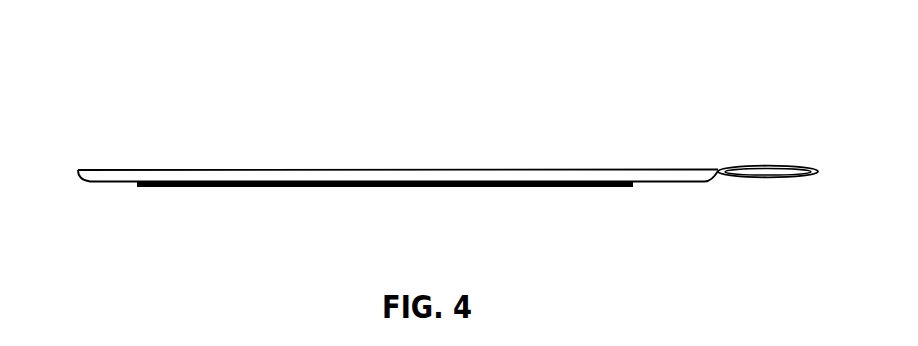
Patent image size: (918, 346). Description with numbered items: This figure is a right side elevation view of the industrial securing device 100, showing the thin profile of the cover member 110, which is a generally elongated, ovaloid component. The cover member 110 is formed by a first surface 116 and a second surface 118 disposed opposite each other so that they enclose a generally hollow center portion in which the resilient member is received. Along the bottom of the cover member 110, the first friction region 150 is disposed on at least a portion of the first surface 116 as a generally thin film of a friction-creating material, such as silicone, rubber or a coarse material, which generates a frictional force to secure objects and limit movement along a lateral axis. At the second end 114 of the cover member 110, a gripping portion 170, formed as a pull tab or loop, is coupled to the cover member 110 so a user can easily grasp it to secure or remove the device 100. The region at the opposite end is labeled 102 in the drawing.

The industrial securing device 100 is at (421, 173).
The first end 102 is at (95, 155).
The cover member 110 is at (340, 170).
The second end 114 is at (685, 160).
The first surface 116 is at (257, 186).
The second surface 118 is at (202, 170).
The first friction region 150 is at (593, 187).
The gripping portion 170 is at (793, 178).